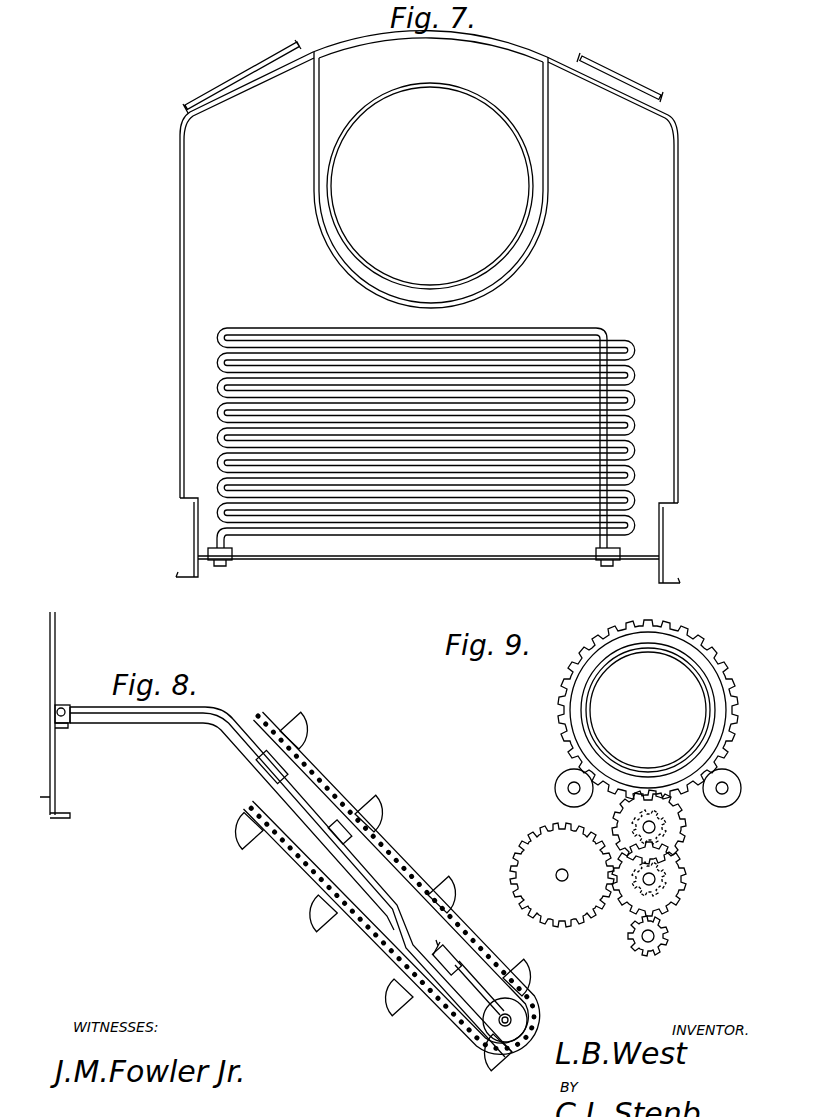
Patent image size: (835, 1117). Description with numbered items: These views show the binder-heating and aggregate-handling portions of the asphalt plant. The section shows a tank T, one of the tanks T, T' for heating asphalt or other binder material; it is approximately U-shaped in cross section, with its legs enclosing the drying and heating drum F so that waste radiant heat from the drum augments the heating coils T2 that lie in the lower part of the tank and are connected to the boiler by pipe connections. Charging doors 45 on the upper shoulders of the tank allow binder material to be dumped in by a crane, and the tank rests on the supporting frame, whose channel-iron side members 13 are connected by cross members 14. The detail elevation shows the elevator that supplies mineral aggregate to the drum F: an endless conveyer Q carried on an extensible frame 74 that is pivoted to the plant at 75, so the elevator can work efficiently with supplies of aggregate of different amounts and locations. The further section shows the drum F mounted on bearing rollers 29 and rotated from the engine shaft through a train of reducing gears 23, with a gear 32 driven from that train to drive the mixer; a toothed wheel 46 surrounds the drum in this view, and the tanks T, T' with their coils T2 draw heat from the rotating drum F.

In FIG. 7, the side members 13 is at (190, 547).
In FIG. 7, the cross members 14 is at (408, 34).
In FIG. 8, the cross members 14 is at (57, 803).
In FIG. 7, the charging doors 45 is at (243, 72).
In FIG. 9, the gear wheel 46 is at (727, 665).
In FIG. 9, the bearing rollers 29 is at (554, 788).
In FIG. 9, the train of reducing gears 23 is at (669, 873).
In FIG. 9, the gear 32 is at (562, 875).
In FIG. 8, the extensible frame 74 is at (318, 776).
In FIG. 8, the pivot 75 is at (64, 707).
In FIG. 8, the endless conveyer Q is at (401, 857).
In FIG. 7, the drum F is at (336, 228).
In FIG. 9, the drum F is at (632, 780).
In FIG. 7, the tank T is at (455, 441).
In FIG. 8, the tank T is at (65, 713).
In FIG. 7, the tank T' is at (421, 180).
In FIG. 7, the heating coils T2 is at (522, 322).